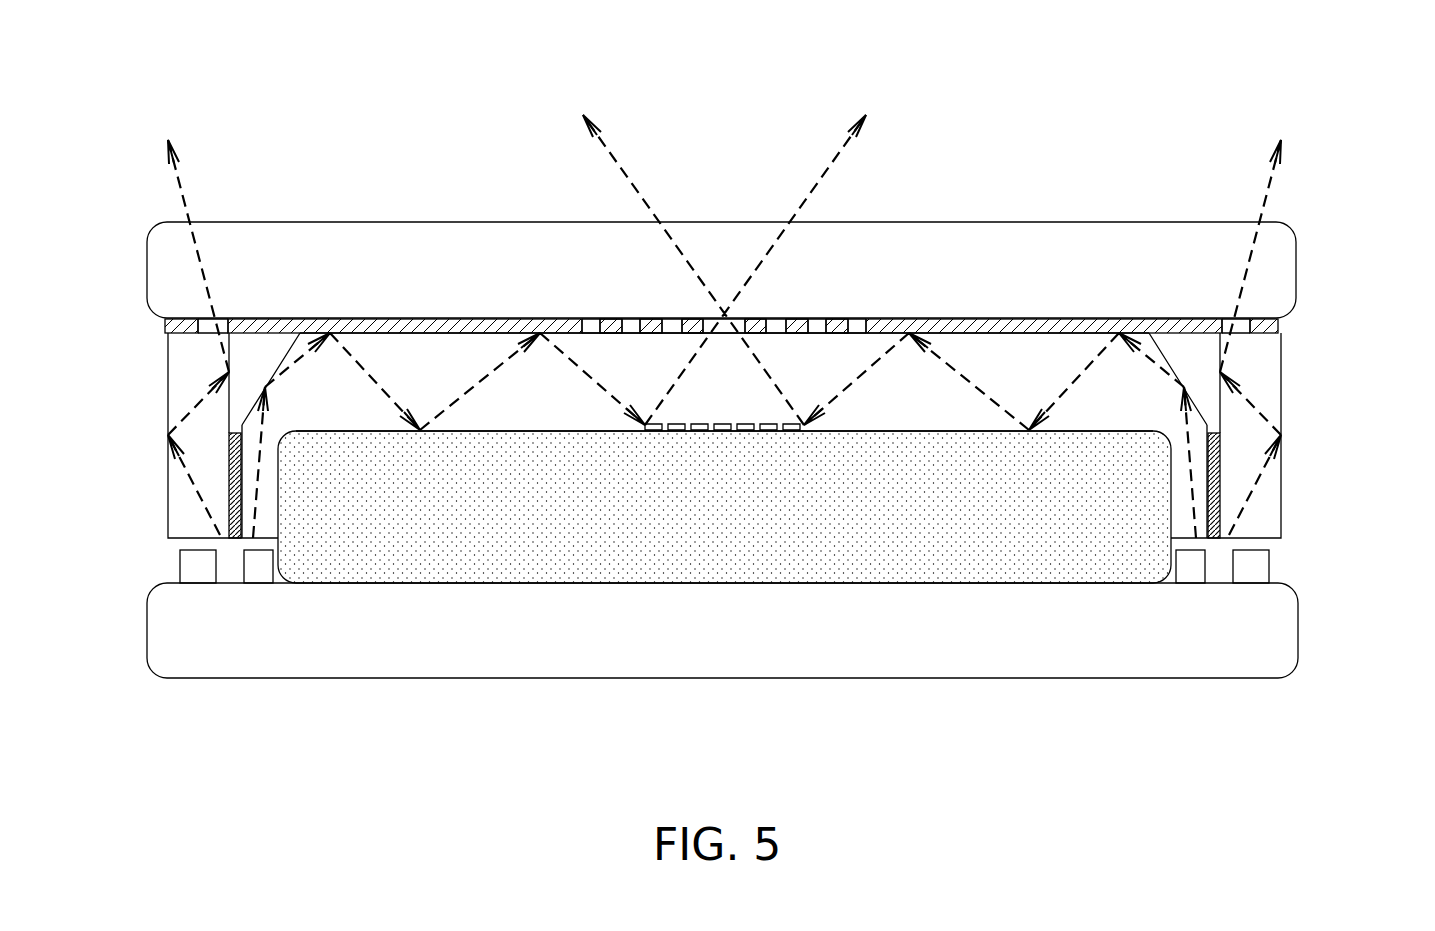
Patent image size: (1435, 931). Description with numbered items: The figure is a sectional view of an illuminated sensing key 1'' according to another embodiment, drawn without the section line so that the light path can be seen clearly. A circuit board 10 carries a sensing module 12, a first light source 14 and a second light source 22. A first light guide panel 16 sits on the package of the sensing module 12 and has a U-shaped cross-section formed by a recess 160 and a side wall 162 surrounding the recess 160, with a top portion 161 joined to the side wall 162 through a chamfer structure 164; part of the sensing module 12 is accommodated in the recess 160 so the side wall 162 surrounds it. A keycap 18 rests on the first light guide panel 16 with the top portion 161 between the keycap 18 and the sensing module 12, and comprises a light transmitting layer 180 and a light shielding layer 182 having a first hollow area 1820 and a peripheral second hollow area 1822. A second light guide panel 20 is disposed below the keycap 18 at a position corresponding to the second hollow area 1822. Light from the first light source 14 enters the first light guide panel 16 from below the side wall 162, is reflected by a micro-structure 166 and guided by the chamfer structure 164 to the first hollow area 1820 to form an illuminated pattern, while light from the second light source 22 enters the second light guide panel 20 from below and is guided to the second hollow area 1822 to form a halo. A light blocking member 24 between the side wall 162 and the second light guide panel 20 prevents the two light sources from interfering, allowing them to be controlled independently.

The illuminated sensing key 1'' is at (1285, 63).
The circuit board 10 is at (753, 643).
The sensing module 12 is at (753, 538).
The first light source 14 is at (252, 573).
The first light guide panel 16 is at (724, 463).
The keycap 18 is at (743, 242).
The second light guide panel 20 is at (168, 390).
The second light source 22 is at (190, 568).
The light blocking member 24 is at (229, 470).
The recess 160 is at (968, 430).
The top portion 161 is at (399, 358).
The side wall 162 is at (250, 509).
The chamfer structure 164 is at (282, 363).
The micro-structure 166 is at (673, 432).
The light transmitting layer 180 is at (1270, 268).
The light shielding layer 182 is at (717, 241).
The first hollow area 1820 is at (728, 318).
The second hollow area 1822 is at (207, 320).